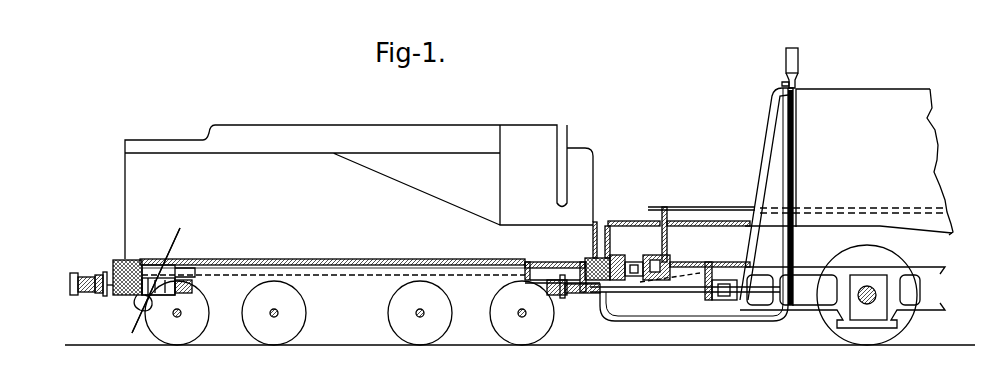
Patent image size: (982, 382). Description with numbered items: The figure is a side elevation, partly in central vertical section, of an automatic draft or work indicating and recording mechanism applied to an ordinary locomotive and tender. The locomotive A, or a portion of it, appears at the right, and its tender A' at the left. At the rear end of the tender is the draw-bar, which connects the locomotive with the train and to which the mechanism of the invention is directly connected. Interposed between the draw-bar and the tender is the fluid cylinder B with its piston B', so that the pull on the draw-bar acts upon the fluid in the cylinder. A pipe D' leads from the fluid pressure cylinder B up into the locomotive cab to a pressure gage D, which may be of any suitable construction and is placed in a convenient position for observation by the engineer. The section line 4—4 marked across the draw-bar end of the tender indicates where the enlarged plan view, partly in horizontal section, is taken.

The locomotive A is at (846, 217).
The tender A' is at (437, 235).
The fluid cylinder B is at (152, 288).
The piston B' is at (158, 278).
The pressure gage D is at (801, 68).
The pipe D' is at (584, 214).
The section line 4— 4 is at (213, 285).